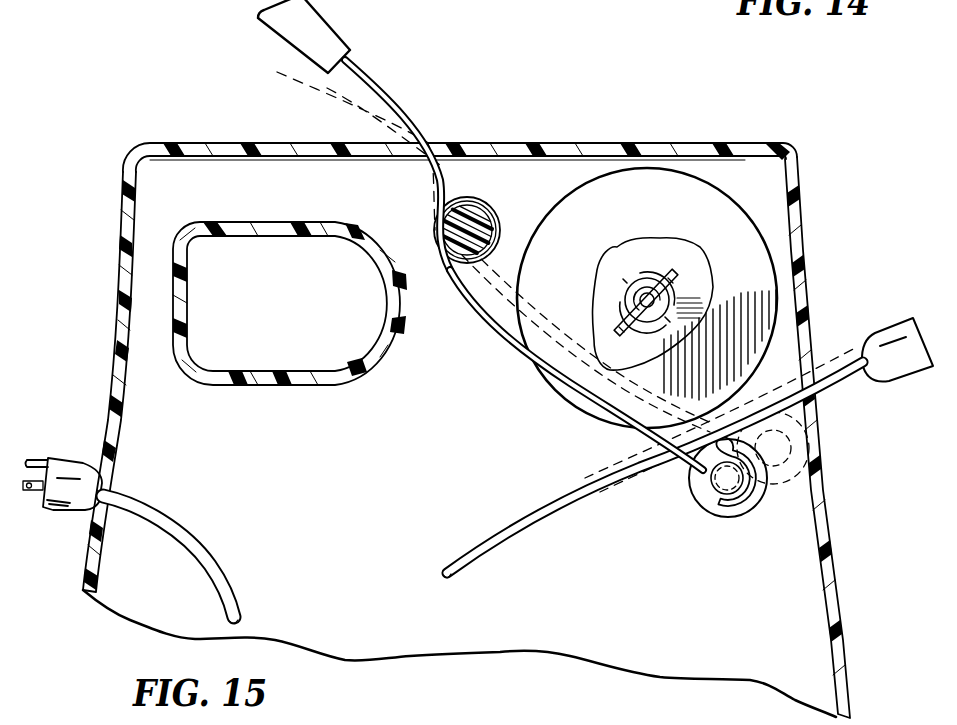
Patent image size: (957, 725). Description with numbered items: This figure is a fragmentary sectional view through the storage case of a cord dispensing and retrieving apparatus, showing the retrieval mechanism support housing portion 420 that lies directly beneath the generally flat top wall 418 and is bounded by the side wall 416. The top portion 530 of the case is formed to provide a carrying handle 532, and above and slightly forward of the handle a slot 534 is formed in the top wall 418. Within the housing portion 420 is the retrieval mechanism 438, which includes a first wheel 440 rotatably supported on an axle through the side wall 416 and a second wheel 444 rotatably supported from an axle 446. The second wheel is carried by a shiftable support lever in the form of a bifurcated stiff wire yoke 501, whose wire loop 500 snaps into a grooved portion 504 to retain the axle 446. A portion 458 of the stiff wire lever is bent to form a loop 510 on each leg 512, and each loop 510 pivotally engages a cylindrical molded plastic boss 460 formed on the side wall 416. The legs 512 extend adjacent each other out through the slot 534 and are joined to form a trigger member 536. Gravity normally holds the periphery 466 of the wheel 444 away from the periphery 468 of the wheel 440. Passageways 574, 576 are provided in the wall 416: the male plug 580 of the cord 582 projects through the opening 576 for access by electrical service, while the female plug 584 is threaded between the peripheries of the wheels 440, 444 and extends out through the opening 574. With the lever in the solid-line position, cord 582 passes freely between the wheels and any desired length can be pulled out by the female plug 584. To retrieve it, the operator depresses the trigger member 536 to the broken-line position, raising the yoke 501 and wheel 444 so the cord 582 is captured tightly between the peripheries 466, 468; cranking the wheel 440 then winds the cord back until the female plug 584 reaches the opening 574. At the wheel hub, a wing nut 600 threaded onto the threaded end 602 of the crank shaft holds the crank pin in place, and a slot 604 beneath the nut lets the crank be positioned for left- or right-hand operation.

The side wall 416 is at (794, 230).
The top wall 418 is at (529, 140).
The retrieval mechanism support housing portion 420 is at (249, 130).
The retrieval mechanism 438 is at (461, 415).
The wheel 440 is at (675, 190).
The wheel 444 is at (754, 500).
The axle 446 is at (731, 498).
The portion of the stiff wire support lever 458 is at (495, 199).
The cylindrical molded plastic boss 460 is at (438, 243).
The periphery 466 is at (696, 500).
The periphery 468 is at (655, 168).
The wire loop 500 is at (757, 488).
The bifurcated stiff wire yoke 501 is at (363, 76).
The grooved portion 504 is at (713, 508).
The loop 510 is at (497, 231).
The leg 512 is at (492, 325).
The top portion 530 is at (170, 202).
The carrying handle 532 is at (268, 235).
The slot 534 is at (341, 150).
The trigger member 536 is at (310, 19).
The passageway 574 is at (808, 337).
The passageway 576 is at (111, 458).
The male plug 580 is at (63, 457).
The cord 582 is at (513, 518).
The female plug 584 is at (900, 328).
The wing nut 600 is at (643, 278).
The threaded end 602 is at (665, 300).
The slot 604 is at (628, 280).